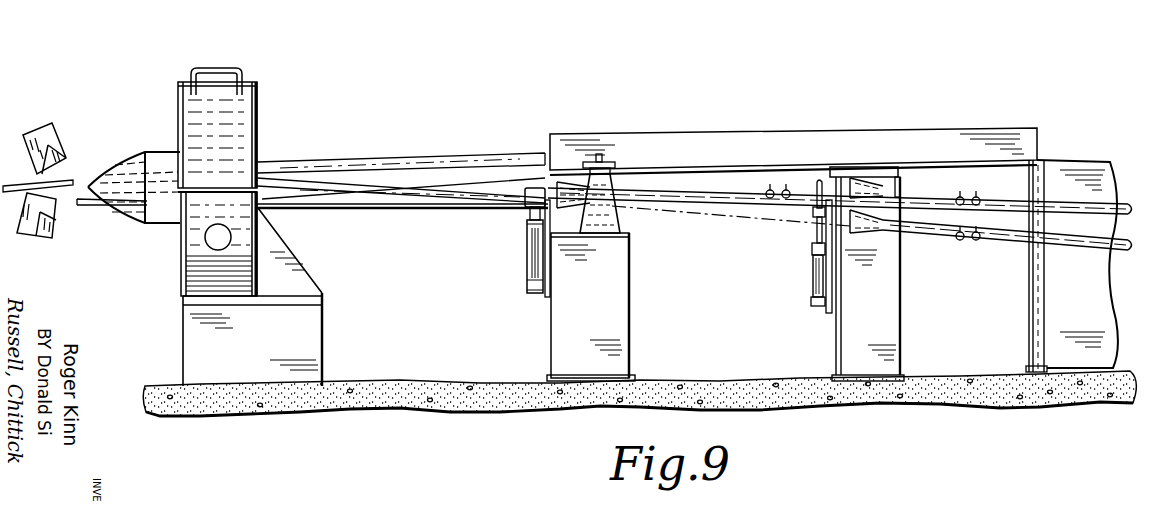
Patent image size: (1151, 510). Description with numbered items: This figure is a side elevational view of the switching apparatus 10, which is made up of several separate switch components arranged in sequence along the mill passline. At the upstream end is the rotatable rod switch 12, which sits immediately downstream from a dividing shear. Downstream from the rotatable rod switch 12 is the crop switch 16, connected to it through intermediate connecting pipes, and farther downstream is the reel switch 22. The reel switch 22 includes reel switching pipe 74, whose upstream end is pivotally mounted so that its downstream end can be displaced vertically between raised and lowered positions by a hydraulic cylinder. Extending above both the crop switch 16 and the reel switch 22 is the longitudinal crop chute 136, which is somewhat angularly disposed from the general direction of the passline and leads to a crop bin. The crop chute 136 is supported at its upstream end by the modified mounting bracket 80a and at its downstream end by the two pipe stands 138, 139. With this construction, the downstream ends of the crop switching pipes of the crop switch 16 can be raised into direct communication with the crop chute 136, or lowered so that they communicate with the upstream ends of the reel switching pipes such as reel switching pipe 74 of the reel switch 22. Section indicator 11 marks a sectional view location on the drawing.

The rotatable rod switch 12 is at (216, 63).
The switching apparatus 10 is at (521, 378).
The crop switch 16 is at (600, 120).
The crop chute 136 is at (698, 140).
The section line 11-11 / clamp bracket 11 is at (806, 378).
The reel switch 22 is at (902, 129).
The modified mounting bracket 80a is at (621, 223).
The reel switching pipe 74 is at (733, 203).
The pipe stand 138 is at (888, 309).
The pipe stand 139 is at (1036, 314).